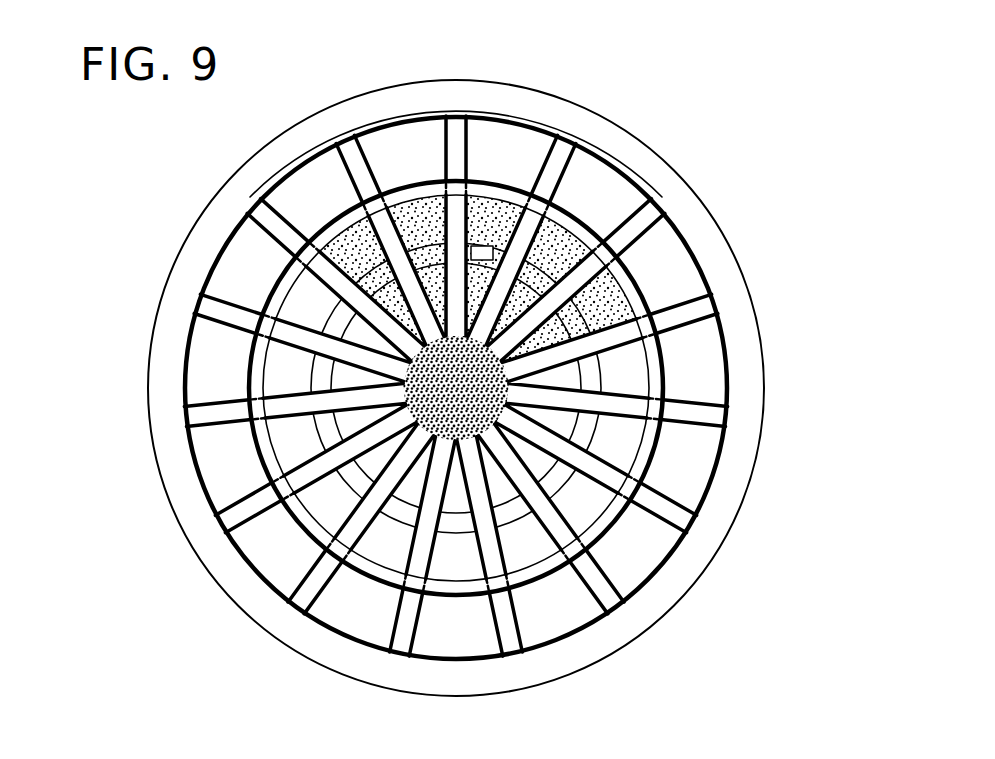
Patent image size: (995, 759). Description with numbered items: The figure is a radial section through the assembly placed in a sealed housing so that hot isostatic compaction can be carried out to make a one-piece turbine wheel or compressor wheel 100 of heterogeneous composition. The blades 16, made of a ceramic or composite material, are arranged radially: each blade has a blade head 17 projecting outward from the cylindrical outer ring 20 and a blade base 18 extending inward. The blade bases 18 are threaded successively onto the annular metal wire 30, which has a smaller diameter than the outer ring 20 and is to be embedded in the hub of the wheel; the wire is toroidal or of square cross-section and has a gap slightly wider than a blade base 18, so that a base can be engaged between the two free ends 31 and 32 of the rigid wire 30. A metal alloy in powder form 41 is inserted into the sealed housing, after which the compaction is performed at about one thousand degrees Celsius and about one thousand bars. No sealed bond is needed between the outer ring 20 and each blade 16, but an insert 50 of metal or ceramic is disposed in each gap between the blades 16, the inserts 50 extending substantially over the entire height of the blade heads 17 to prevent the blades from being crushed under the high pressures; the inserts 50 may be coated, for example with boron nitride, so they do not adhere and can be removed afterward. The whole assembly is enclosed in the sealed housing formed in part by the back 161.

The turbine wheel or compressor wheel 100 is at (766, 256).
The back 161 is at (742, 378).
The metal alloy in powder form 41 is at (414, 216).
The free end 31 is at (470, 258).
The free end 32 is at (492, 255).
The annular metal wire 30 is at (590, 300).
The blade base 18 is at (593, 465).
The blade 16 is at (230, 517).
The outer ring 20 is at (312, 522).
The insert 50 is at (210, 340).
The blade head 17 is at (681, 524).